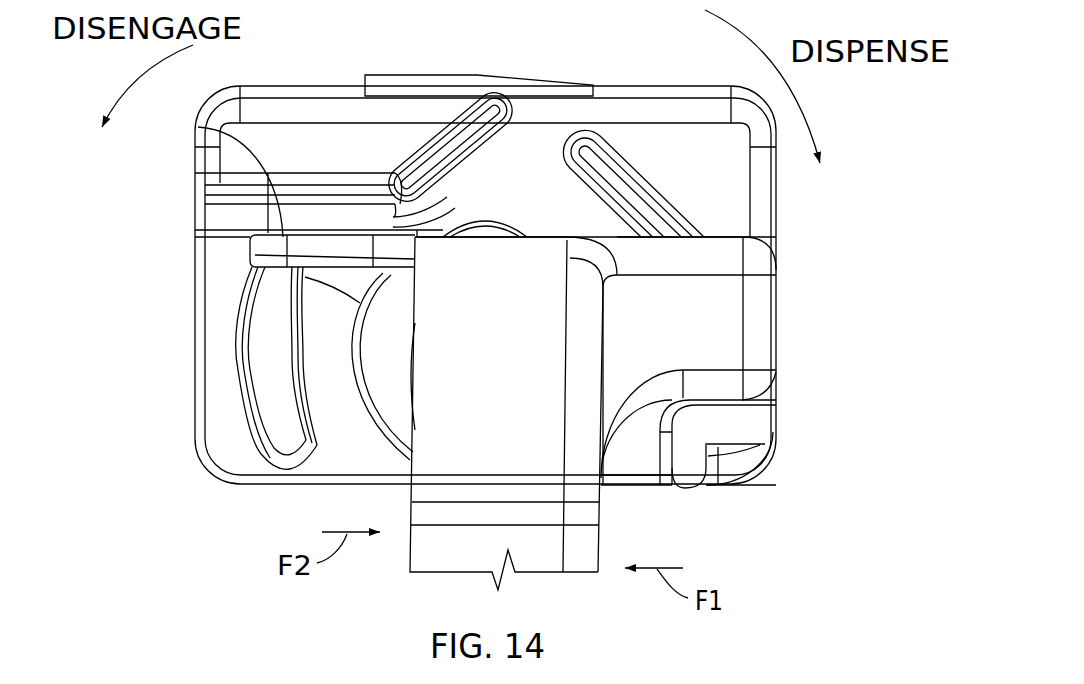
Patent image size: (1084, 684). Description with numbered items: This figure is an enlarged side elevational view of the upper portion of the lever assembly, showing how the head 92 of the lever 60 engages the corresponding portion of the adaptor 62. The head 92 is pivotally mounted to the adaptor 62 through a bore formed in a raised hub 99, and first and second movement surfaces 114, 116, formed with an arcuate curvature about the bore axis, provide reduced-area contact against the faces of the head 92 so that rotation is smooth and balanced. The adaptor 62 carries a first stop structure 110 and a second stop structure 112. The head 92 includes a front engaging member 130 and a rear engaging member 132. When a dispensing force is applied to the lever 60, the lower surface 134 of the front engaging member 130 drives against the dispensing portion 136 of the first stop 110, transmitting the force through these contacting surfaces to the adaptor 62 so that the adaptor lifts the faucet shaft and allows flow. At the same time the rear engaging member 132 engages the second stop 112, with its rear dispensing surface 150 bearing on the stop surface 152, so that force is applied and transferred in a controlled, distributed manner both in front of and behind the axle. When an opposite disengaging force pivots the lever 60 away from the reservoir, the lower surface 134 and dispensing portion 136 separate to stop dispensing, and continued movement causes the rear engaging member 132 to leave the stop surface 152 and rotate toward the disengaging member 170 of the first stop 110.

The lever 60 is at (404, 538).
The adaptor 62 is at (483, 73).
The head 92 is at (510, 384).
The hub 99 is at (393, 415).
The first stop structure 110 is at (737, 459).
The second stop structure 112 is at (368, 160).
The first movement surface 114 is at (632, 190).
The second movement surface 116 is at (272, 463).
The front engaging member 130 is at (763, 295).
The rear engaging member 132 is at (245, 254).
The lower surface 134 is at (775, 397).
The dispensing portion 136 is at (760, 430).
The rear dispensing surface 150 is at (203, 128).
The stop surface 152 is at (205, 213).
The disengaging member 170 is at (687, 475).